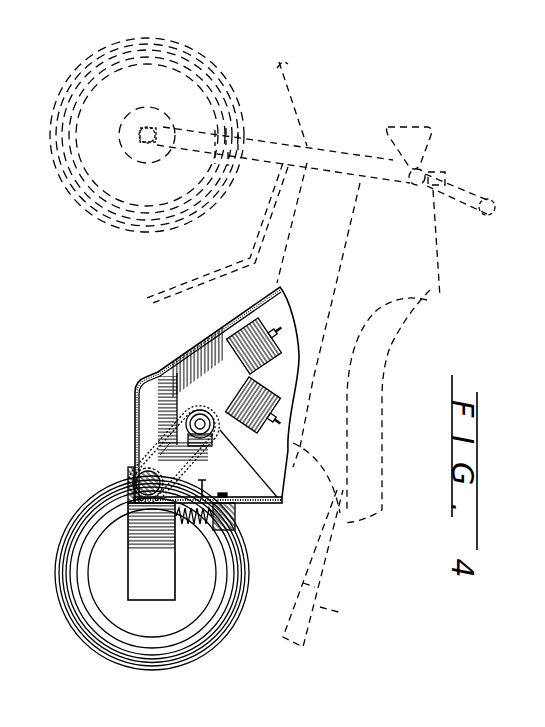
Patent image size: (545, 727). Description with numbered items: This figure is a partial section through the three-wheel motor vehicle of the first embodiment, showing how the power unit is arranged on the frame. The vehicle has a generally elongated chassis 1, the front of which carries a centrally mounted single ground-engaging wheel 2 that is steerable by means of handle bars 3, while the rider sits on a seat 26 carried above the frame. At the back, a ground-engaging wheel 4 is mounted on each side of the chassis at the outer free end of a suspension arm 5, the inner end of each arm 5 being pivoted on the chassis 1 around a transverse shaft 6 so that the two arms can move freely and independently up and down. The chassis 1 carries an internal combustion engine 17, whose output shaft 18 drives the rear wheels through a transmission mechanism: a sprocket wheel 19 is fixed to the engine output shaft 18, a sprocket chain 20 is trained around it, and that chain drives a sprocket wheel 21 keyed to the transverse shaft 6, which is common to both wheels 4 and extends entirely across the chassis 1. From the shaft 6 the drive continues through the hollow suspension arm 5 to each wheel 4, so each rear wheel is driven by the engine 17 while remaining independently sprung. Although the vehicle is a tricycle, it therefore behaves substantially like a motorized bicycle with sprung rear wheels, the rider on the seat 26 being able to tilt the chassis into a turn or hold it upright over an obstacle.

The chassis 1 is at (152, 368).
The single ground-engaging wheel 2 is at (107, 217).
The handle bars 3 is at (493, 216).
The ground-engaging wheel 4 is at (213, 627).
The suspension arm 5 is at (140, 555).
The transverse shaft 6 is at (133, 470).
The internal combustion engine 17 is at (207, 347).
The engine output shaft 18 is at (281, 500).
The sprocket wheel 19 is at (215, 430).
The sprocket chain 20 is at (152, 430).
The sprocket wheel 21 is at (152, 460).
The seat 26 is at (382, 396).